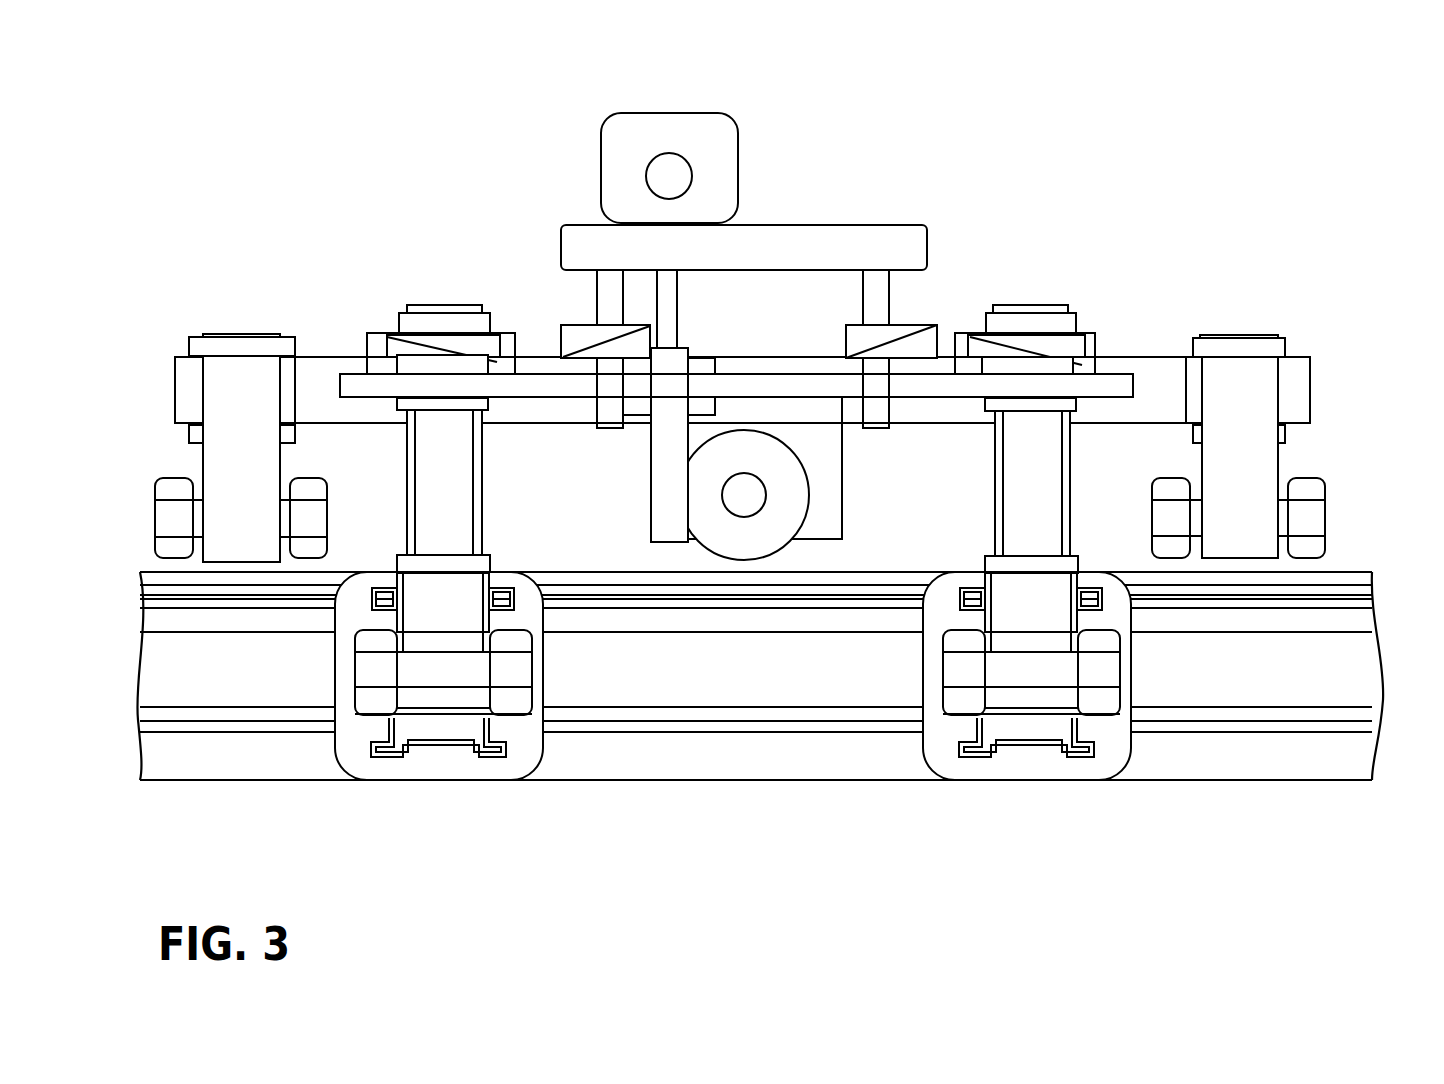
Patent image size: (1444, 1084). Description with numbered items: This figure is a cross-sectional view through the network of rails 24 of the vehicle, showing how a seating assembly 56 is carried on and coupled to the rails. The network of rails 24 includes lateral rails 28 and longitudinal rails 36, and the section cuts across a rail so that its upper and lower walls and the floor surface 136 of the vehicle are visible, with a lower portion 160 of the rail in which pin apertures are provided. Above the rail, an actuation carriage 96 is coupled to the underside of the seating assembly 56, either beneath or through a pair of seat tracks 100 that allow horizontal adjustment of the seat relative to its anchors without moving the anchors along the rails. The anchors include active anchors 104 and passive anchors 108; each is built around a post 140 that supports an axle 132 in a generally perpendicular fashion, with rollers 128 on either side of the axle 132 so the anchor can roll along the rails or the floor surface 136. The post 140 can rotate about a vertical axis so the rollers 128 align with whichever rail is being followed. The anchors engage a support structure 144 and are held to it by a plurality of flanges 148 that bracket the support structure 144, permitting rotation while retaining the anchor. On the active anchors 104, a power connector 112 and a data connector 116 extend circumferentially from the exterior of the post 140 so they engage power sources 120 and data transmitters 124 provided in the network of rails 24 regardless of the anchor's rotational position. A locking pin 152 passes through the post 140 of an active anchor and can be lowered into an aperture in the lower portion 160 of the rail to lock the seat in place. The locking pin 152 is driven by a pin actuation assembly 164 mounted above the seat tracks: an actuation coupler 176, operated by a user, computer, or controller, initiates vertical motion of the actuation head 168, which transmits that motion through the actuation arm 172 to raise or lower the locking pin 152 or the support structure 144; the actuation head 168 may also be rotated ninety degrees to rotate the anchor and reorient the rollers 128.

The network of rails 24 is at (1383, 650).
The lateral rails 28 is at (336, 767).
The longitudinal rails 36 is at (1348, 693).
The seating assembly 56 is at (871, 222).
The actuation carriage 96 is at (203, 322).
The seat tracks 100 is at (1312, 373).
The active anchors 104 is at (396, 465).
The passive anchors 108 is at (232, 460).
The power connector 112 is at (375, 598).
The data connector 116 is at (383, 594).
The power sources 120 is at (1350, 592).
The data transmitters 124 is at (1365, 604).
The rollers 128 is at (190, 440).
The axle 132 is at (173, 487).
The floor surface 136 is at (170, 518).
The post 140 is at (196, 453).
The support structure 144 is at (185, 370).
The flanges 148 is at (295, 412).
The locking pin 152 is at (458, 493).
The lower portion 160 is at (389, 757).
The pin actuation assembly 164 is at (648, 132).
The actuation head 168 is at (600, 151).
The actuation arm 172 is at (668, 505).
The actuation coupler 176 is at (665, 178).